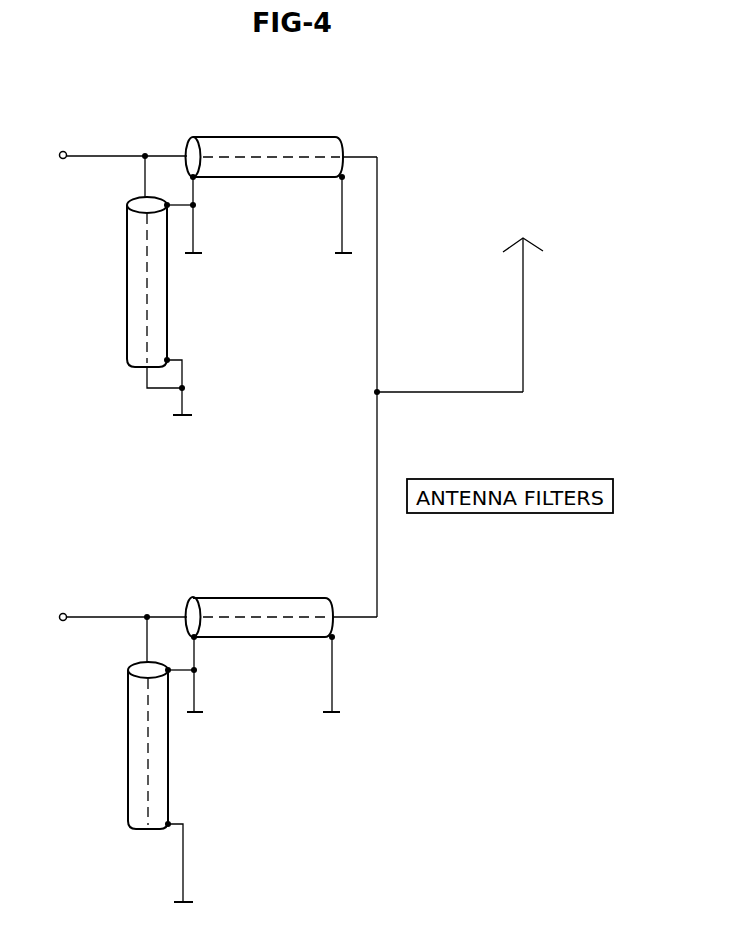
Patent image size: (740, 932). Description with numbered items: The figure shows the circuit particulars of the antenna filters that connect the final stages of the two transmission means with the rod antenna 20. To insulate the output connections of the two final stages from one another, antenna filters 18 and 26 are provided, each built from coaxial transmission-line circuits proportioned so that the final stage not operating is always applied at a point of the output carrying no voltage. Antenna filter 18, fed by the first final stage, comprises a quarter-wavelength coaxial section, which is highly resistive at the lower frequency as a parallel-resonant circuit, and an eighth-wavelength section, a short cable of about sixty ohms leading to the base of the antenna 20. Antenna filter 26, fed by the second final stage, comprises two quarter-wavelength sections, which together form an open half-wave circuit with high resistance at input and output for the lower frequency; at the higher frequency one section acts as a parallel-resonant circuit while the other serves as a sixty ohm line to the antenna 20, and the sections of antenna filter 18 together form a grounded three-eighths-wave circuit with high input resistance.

The antenna filter 18 is at (285, 264).
The antenna filter 26 is at (284, 713).
The rod antenna 20 is at (523, 313).